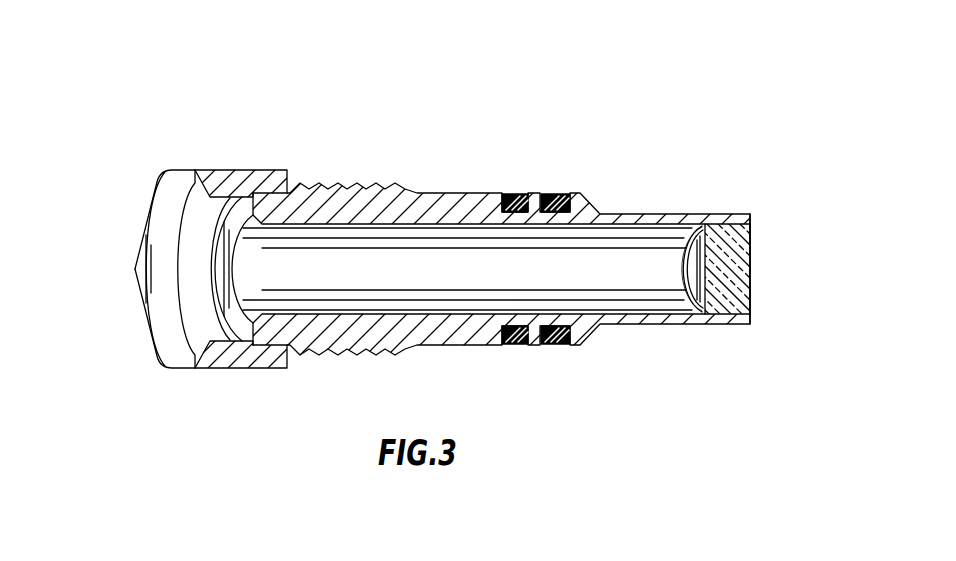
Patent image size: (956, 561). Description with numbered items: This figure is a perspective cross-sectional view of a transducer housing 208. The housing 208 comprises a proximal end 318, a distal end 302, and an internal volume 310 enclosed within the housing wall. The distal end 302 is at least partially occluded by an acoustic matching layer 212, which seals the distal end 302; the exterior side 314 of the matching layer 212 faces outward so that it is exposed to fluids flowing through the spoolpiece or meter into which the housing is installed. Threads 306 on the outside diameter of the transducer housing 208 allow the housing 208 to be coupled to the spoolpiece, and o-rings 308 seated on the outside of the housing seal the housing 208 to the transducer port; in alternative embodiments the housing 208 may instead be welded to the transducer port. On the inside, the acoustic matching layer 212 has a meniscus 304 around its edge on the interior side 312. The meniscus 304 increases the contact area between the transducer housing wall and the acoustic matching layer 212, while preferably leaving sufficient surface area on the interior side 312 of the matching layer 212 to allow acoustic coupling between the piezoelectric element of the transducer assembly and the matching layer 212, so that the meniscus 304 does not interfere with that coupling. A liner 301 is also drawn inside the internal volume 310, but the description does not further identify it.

The transducer housing 208 is at (145, 172).
The proximal end 318 is at (137, 318).
The threads 306 is at (393, 182).
The internal volume 310 is at (372, 258).
The tube liner 301 is at (575, 224).
The o-rings 308 is at (552, 193).
The meniscus 304 is at (692, 228).
The interior side 312 is at (687, 284).
The distal end 302 is at (758, 234).
The acoustic matching layer 212 is at (731, 235).
The exterior side 314 is at (751, 278).